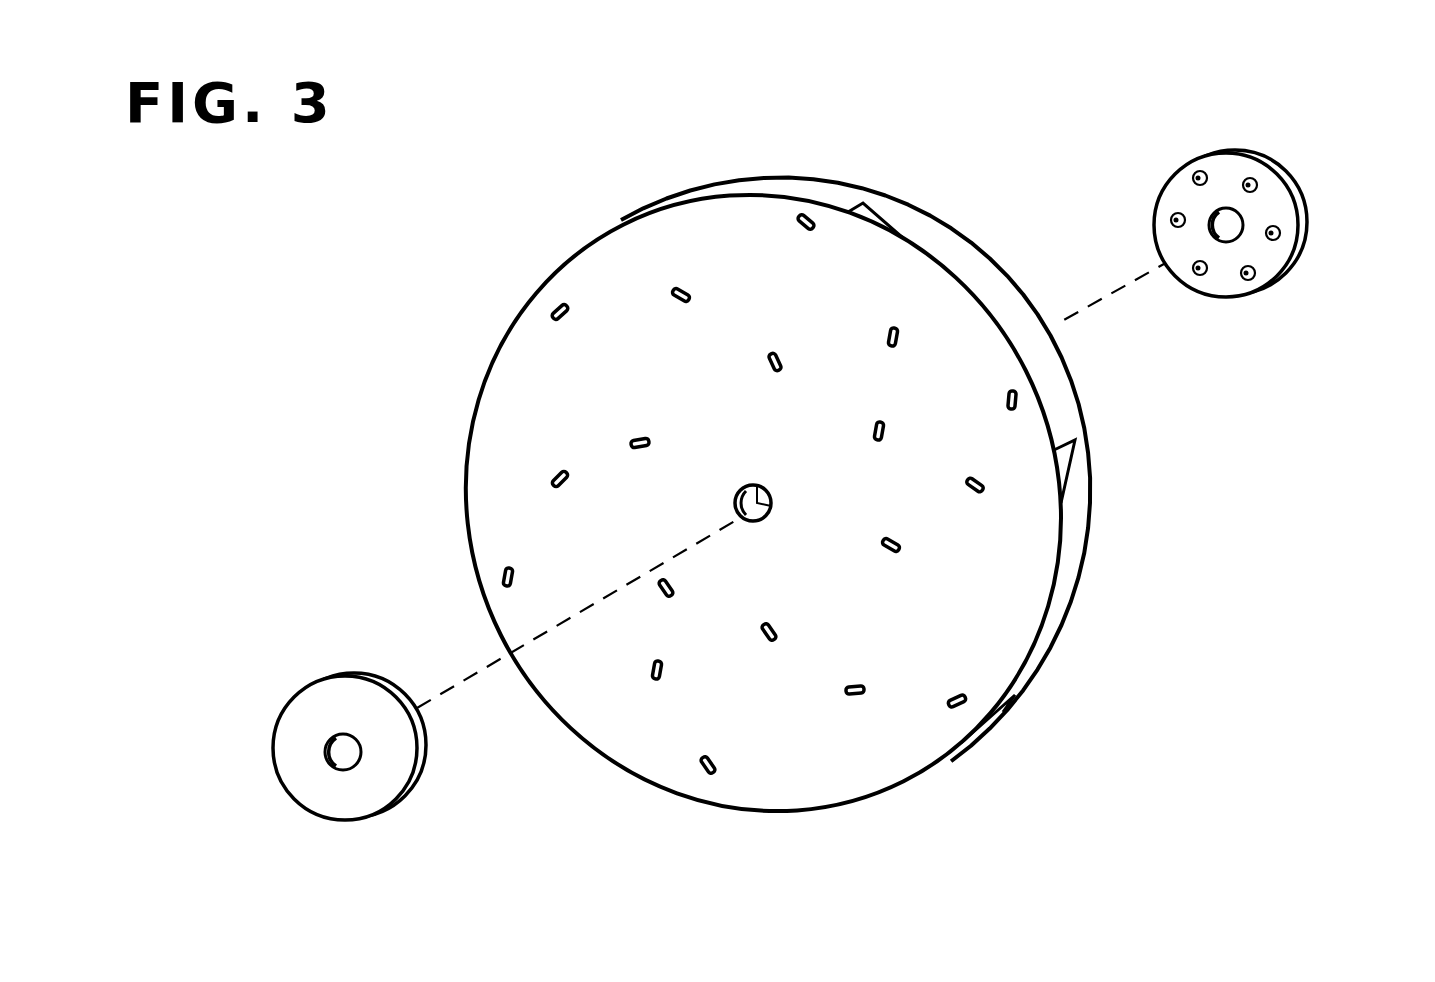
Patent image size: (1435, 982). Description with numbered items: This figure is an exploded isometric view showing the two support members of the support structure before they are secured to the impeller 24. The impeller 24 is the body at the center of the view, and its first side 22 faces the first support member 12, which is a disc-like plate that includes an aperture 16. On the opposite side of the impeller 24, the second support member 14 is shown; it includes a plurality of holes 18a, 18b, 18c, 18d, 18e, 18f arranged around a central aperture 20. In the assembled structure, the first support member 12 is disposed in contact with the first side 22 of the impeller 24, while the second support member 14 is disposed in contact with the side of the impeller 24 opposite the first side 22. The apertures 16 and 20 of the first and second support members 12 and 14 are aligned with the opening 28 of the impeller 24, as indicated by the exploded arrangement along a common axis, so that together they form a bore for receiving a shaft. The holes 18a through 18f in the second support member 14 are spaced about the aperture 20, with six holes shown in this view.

The first support member 12 is at (420, 775).
The second support member 14 is at (1287, 281).
The aperture 16 is at (347, 747).
The hole 18a is at (1280, 233).
The hole 18b is at (1250, 279).
The hole 18c is at (1197, 274).
The hole 18d is at (1172, 219).
The hole 18e is at (1197, 173).
The hole 18f is at (1252, 181).
The aperture 20 is at (1230, 222).
The first side 22 is at (980, 625).
The impeller 24 is at (1078, 540).
The opening 28 is at (735, 503).